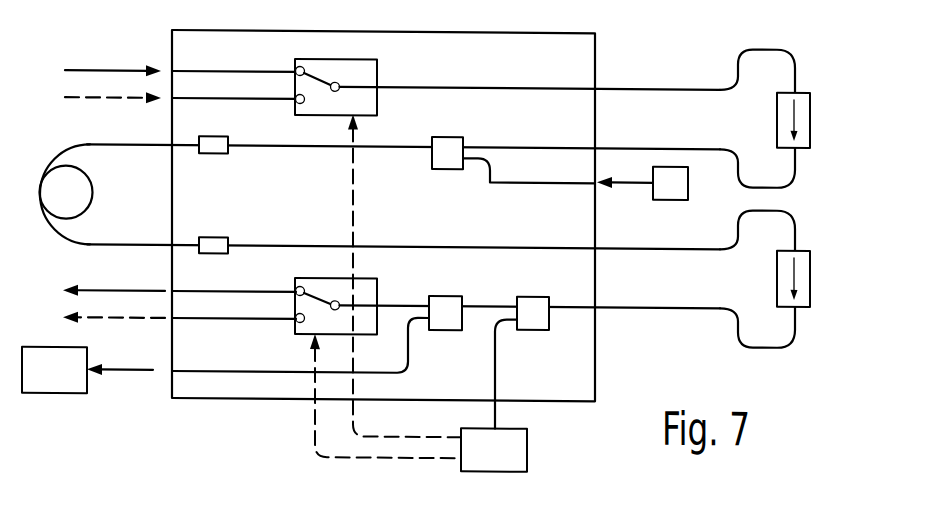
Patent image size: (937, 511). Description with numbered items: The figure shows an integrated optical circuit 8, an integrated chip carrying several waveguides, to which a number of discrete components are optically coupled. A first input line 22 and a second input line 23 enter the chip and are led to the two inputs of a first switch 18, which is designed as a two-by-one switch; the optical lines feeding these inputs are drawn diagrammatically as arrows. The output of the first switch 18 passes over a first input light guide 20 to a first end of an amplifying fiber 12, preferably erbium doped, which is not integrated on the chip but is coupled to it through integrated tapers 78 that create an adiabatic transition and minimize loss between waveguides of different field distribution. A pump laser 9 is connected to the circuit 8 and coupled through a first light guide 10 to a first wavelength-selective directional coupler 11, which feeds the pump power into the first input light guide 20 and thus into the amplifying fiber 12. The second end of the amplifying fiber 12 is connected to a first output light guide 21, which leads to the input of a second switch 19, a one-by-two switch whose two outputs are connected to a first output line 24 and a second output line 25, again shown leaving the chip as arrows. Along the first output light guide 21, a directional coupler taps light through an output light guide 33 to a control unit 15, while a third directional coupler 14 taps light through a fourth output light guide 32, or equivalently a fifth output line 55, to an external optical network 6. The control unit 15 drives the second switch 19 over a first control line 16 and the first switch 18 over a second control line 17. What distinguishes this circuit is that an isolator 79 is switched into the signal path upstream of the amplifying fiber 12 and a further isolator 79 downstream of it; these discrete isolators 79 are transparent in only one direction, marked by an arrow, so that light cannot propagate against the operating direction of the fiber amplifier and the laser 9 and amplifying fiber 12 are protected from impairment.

The optical network 6 is at (75, 394).
The integrated optical circuit 8 is at (606, 49).
The pump laser 9 is at (671, 196).
The first light guide 10 is at (540, 182).
The first wavelength-selective directional coupler 11 is at (432, 153).
The amplifying fiber 12 is at (95, 187).
The third directional coupler 14 is at (442, 294).
The control unit 15 is at (518, 448).
The first control line 16 is at (312, 438).
The second control line 17 is at (351, 209).
The first switch 18 is at (300, 59).
The second switch 19 is at (300, 278).
The first input light guide 20 is at (470, 84).
The first output light guide 21 is at (480, 244).
The first input line 22 is at (167, 70).
The second input line 23 is at (167, 99).
The first output line 24 is at (156, 326).
The second output line 25 is at (158, 282).
The fourth output light guide 32 is at (166, 371).
The output light guide 33 is at (495, 360).
The fifth output line 55 is at (218, 372).
The integrated tapers 78 is at (218, 154).
The isolator 79 is at (777, 113).